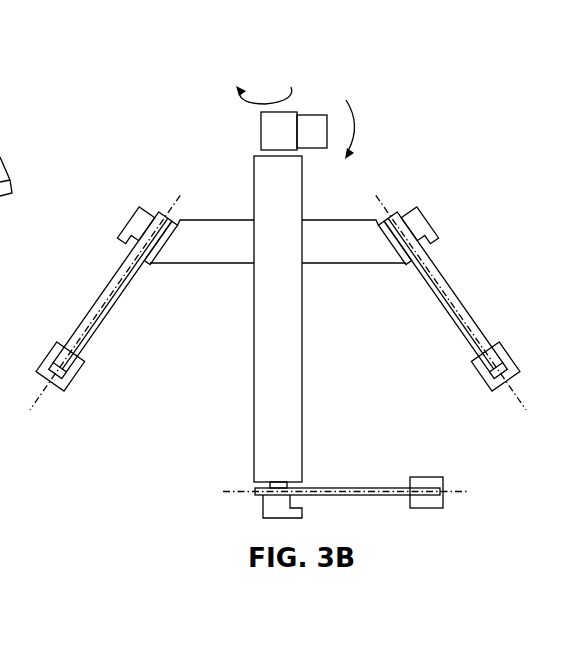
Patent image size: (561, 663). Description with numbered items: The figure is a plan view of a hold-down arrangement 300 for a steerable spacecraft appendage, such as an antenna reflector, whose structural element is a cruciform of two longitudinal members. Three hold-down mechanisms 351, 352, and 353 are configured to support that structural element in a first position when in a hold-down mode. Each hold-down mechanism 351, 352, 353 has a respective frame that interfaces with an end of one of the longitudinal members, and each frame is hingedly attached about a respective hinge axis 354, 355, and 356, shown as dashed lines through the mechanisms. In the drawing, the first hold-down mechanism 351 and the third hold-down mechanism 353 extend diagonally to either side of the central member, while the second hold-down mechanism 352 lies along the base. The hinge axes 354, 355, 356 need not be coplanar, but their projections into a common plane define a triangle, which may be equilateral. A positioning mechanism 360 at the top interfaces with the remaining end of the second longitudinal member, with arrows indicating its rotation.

The hold-down arrangement 300 is at (187, 117).
The hold-down mechanism 351 is at (446, 279).
The hold-down mechanism 352 is at (345, 487).
The hold-down mechanism 353 is at (101, 298).
The hinge axis 354 is at (512, 408).
The hinge axis 355 is at (445, 496).
The hinge axis 356 is at (45, 407).
The positioning mechanism 360 is at (299, 111).